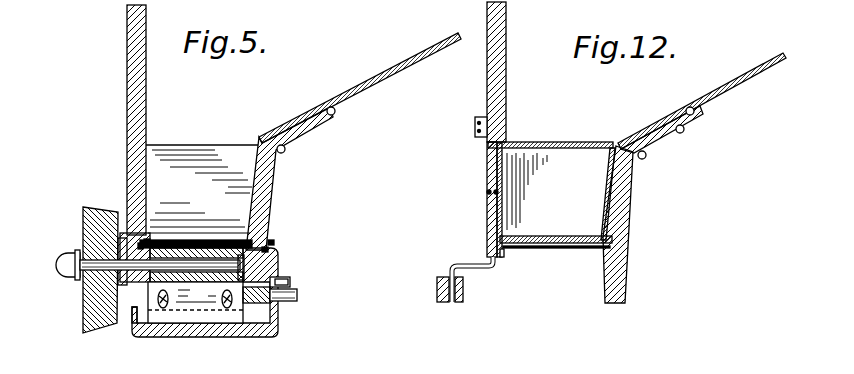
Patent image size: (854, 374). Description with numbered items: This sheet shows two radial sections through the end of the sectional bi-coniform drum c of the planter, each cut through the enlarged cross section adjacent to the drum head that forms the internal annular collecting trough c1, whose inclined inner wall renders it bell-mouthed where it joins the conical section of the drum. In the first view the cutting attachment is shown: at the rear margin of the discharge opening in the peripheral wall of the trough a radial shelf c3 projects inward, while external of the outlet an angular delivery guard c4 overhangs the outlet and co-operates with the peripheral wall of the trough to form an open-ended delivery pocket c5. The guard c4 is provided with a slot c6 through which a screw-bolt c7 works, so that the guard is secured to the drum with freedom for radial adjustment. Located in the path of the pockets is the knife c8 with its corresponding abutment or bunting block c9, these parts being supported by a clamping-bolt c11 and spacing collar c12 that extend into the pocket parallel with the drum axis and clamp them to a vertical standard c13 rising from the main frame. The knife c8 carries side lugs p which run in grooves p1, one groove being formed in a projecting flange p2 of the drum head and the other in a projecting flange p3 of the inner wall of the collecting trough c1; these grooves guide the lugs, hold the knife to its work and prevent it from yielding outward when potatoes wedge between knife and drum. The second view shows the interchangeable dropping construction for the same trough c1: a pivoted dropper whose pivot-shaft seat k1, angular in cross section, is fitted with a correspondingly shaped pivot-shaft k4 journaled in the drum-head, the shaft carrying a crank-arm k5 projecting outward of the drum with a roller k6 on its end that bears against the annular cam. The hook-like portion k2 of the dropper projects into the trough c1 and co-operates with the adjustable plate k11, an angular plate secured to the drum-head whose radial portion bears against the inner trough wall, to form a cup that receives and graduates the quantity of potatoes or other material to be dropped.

In FIG. 5, the sectional bi-coniform drum c is at (147, 78).
In FIG. 5, the collecting trough c1 is at (202, 179).
In FIG. 5, the radial shelf c3 is at (235, 153).
In FIG. 5, the delivery guard c4 is at (272, 335).
In FIG. 5, the delivery pocket c5 is at (143, 307).
In FIG. 5, the slot c6 is at (276, 280).
In FIG. 5, the screw-bolt c7 is at (297, 295).
In FIG. 5, the knife c8 is at (200, 242).
In FIG. 5, the abutment or bunting block c9 is at (283, 228).
In FIG. 5, the clamping-bolt c11 is at (150, 272).
In FIG. 5, the spacing collar c12 is at (120, 280).
In FIG. 5, the vertical standard c13 is at (90, 312).
In FIG. 5, the side lug p is at (140, 248).
In FIG. 5, the groove p1 is at (140, 243).
In FIG. 12, the groove p1 is at (610, 248).
In FIG. 12, the projecting flange of drum head p2 is at (487, 253).
In FIG. 12, the projecting flange of trough inner wall p3 is at (606, 282).
In FIG. 12, the pivot-shaft seat k1 is at (490, 173).
In FIG. 12, the hook-like portion k2 is at (600, 202).
In FIG. 12, the pivot-shaft k4 is at (581, 143).
In FIG. 12, the crank-arm k5 is at (470, 270).
In FIG. 12, the roller k6 is at (443, 292).
In FIG. 12, the adjustable plate k11 is at (487, 118).